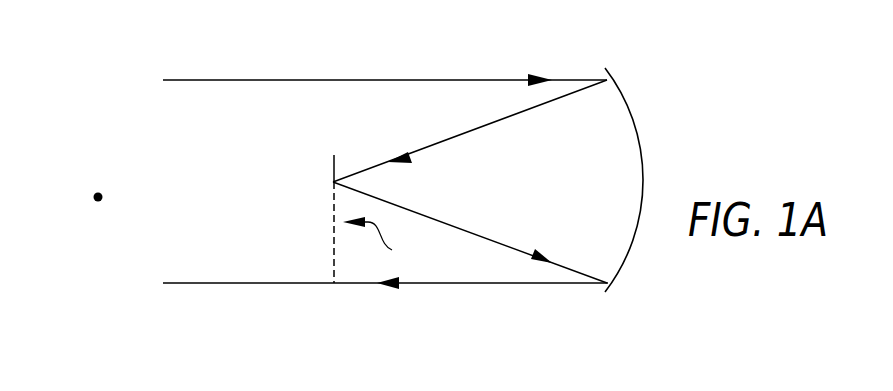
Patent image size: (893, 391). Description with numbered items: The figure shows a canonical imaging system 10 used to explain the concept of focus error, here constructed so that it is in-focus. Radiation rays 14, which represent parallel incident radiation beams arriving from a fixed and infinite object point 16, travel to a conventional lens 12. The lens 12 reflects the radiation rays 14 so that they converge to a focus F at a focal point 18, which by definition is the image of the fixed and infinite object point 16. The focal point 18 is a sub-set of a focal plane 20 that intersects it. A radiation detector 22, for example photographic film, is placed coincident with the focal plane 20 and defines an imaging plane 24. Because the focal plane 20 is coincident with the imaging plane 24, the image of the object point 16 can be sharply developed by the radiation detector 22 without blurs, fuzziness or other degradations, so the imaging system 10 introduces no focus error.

The imaging system 10 is at (700, 135).
The lens 12 is at (642, 150).
The radiation rays 14 is at (248, 80).
The object point 16 is at (99, 193).
The focal point 18 is at (333, 182).
The focal plane 20 is at (333, 163).
The radiation detector 22 is at (333, 223).
The imaging plane 24 is at (383, 241).